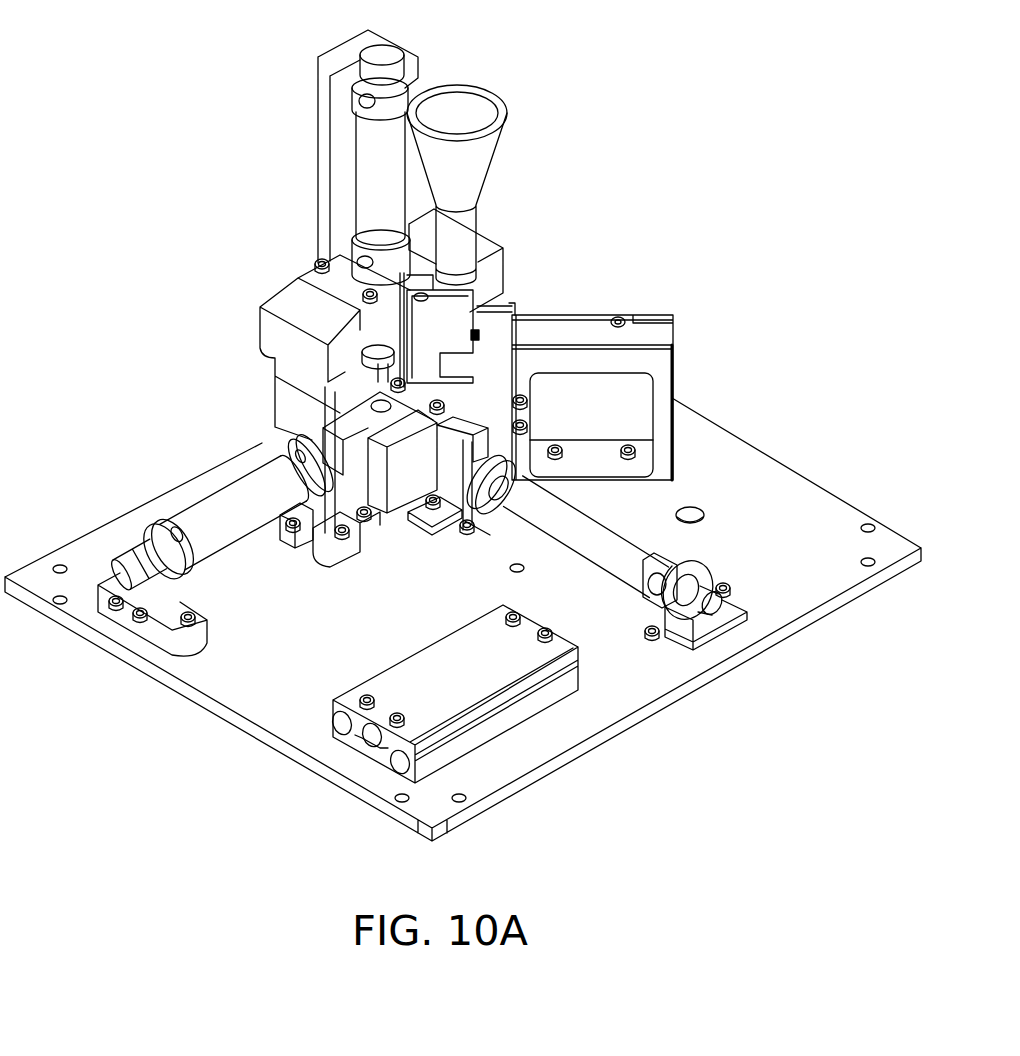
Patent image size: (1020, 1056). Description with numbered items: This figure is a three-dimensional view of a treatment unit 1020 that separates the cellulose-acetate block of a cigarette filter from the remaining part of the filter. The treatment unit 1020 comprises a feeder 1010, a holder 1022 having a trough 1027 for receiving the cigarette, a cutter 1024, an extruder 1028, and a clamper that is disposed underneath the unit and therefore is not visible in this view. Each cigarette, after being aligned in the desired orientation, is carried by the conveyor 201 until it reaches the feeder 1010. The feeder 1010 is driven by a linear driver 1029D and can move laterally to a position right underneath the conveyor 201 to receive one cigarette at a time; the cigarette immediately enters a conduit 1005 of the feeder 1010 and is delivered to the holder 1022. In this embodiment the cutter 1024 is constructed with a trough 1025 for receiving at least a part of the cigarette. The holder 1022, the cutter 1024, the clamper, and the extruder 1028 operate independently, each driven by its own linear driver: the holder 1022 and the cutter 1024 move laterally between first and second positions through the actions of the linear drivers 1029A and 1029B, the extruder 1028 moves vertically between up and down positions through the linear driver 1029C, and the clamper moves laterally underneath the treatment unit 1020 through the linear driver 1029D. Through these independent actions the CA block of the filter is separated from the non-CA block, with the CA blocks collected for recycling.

The treatment unit 1020 is at (762, 781).
The linear driver 1029A is at (613, 543).
The linear driver 1029B is at (232, 500).
The linear driver 1029C is at (370, 173).
The linear driver 1029D is at (580, 323).
The conveyor 201 is at (463, 220).
The conduit 1005 is at (478, 318).
The feeder 1010 is at (430, 330).
The extruder 1028 is at (326, 343).
The trough 1025 is at (388, 350).
The cutter 1024 is at (347, 427).
The trough 1027 is at (462, 432).
The holder 1022 is at (457, 435).